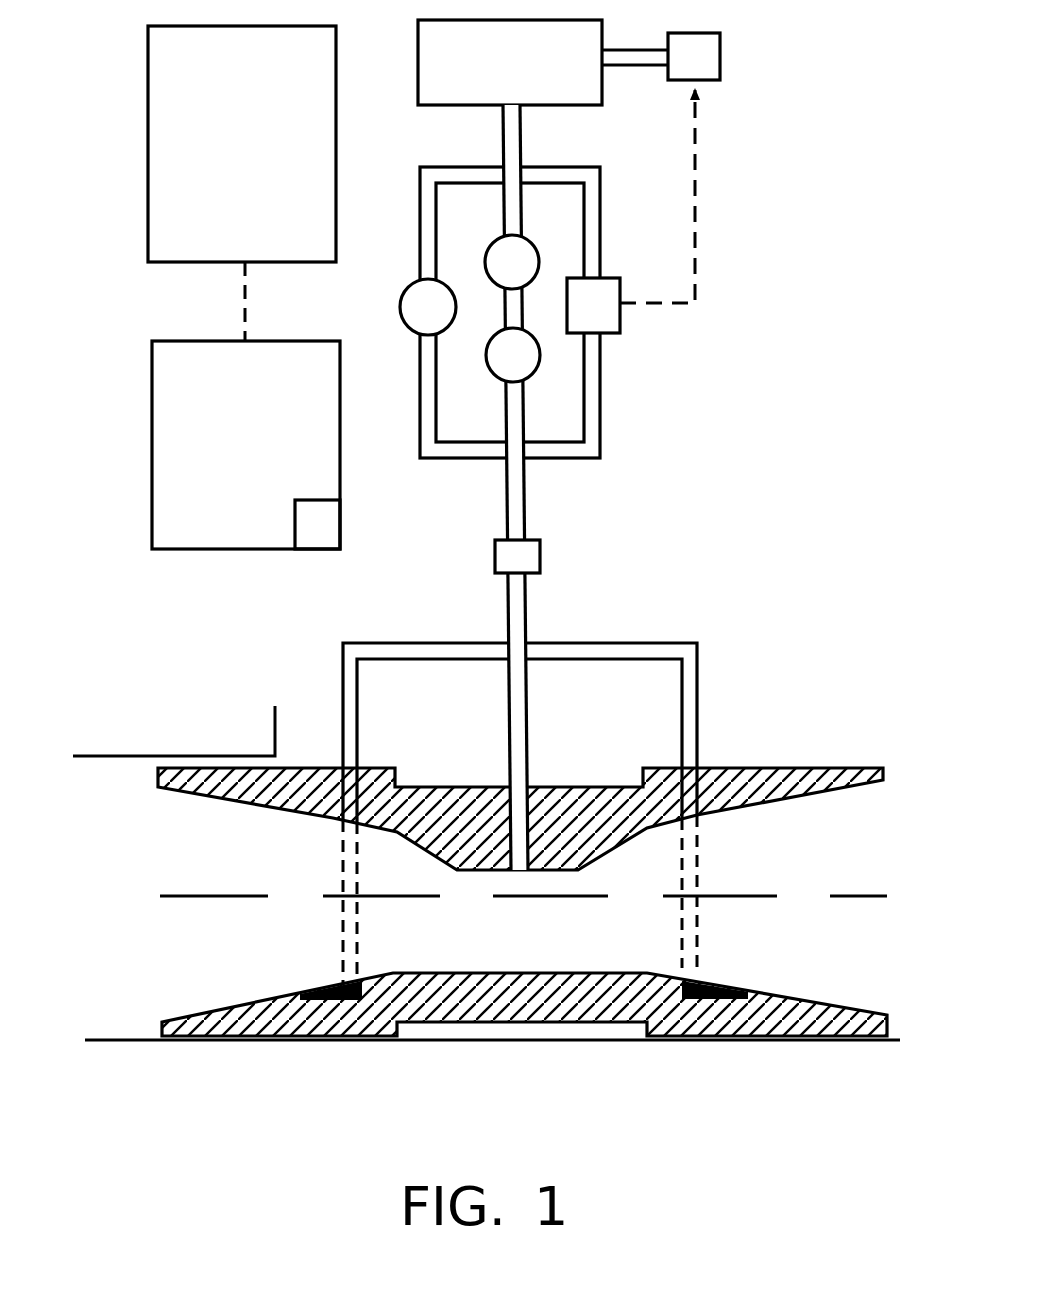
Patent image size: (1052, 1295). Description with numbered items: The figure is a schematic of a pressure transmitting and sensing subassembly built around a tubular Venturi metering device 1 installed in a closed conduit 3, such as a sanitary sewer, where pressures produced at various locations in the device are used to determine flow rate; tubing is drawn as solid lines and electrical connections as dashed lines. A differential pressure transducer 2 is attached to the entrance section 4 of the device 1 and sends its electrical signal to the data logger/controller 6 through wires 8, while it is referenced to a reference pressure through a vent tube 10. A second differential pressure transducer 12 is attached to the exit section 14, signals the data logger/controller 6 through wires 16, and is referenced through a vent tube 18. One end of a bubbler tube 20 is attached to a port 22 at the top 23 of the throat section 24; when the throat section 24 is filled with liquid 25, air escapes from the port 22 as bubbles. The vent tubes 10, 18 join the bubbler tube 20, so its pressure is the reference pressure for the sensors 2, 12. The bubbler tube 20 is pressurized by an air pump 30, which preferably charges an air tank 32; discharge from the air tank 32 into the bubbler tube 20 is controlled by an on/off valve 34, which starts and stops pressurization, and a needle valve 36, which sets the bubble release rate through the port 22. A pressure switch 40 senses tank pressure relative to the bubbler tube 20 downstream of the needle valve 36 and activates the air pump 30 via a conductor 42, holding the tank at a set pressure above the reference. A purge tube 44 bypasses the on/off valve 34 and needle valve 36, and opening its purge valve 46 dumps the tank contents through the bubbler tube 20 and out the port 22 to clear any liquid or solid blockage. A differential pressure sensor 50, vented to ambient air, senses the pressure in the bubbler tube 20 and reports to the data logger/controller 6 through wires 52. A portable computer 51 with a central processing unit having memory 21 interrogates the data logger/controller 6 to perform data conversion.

The tubular Venturi metering device 1 is at (165, 880).
The differential pressure transducer 2 is at (302, 980).
The closed conduit 3 is at (113, 756).
The entrance section 4 is at (492, 1006).
The data logger/controller 6 is at (253, 158).
The wires 8 is at (134, 73).
The vent tube 10 is at (343, 680).
The differential pressure transducer 12 is at (748, 978).
The exit section 14 is at (774, 1013).
The wires 16 is at (134, 143).
The vent tube 18 is at (697, 675).
The bubbler tube 20 is at (527, 742).
The memory 21 is at (340, 517).
The port 22 is at (518, 882).
The top of throat section 23 is at (568, 872).
The throat section 24 is at (606, 843).
The liquid 25 is at (282, 925).
The air pump 30 is at (714, 75).
The air tank 32 is at (528, 77).
The on/off valve 34 is at (531, 277).
The needle valve 36 is at (532, 370).
The pressure switch 40 is at (612, 320).
The conductor 42 is at (689, 196).
The purge tube 44 is at (422, 206).
The purge valve 46 is at (446, 322).
The differential pressure sensor 50 is at (517, 556).
The portable computer 51 is at (152, 472).
The wires 52 is at (134, 212).